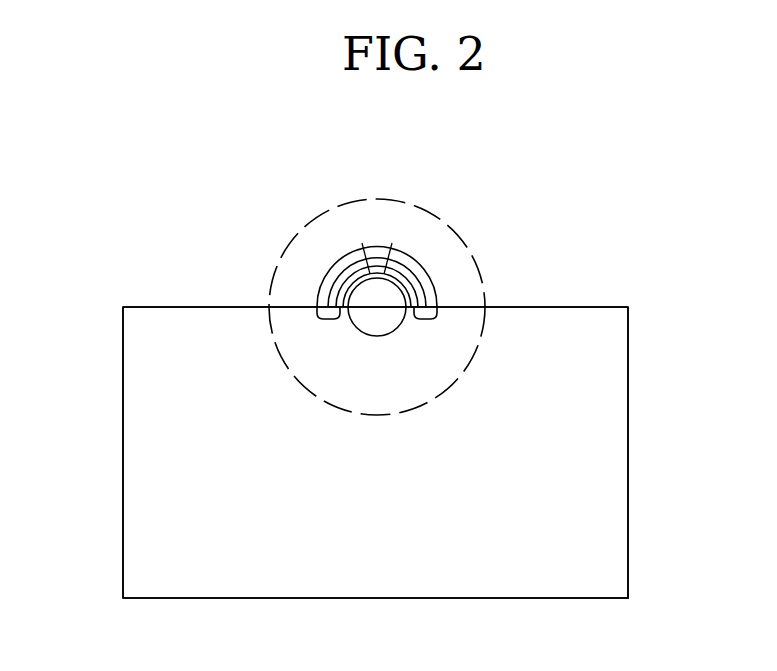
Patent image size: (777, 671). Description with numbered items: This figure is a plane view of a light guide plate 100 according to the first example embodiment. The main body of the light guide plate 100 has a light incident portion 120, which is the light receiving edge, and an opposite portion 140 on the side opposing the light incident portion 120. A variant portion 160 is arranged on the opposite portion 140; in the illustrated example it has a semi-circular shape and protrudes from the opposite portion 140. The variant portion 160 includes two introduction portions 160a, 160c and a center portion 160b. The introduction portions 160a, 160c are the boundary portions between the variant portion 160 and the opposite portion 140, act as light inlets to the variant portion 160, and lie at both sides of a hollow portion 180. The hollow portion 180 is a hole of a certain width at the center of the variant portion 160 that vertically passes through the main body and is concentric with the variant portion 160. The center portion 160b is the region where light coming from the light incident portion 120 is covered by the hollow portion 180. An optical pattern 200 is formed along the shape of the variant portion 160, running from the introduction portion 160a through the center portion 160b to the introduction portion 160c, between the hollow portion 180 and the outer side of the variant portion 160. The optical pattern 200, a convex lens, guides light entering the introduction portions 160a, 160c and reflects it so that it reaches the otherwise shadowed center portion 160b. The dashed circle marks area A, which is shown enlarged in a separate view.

The light guide plate 100 is at (88, 163).
The light incident portion 120 is at (580, 598).
The opposite portion 140 is at (613, 306).
The variant portion 160 is at (375, 233).
The introduction portion 160a is at (322, 298).
The center portion 160b is at (373, 243).
The introduction portion 160c is at (431, 295).
The hollow portion 180 is at (368, 293).
The optical pattern 200 is at (413, 273).
The area A is at (283, 258).